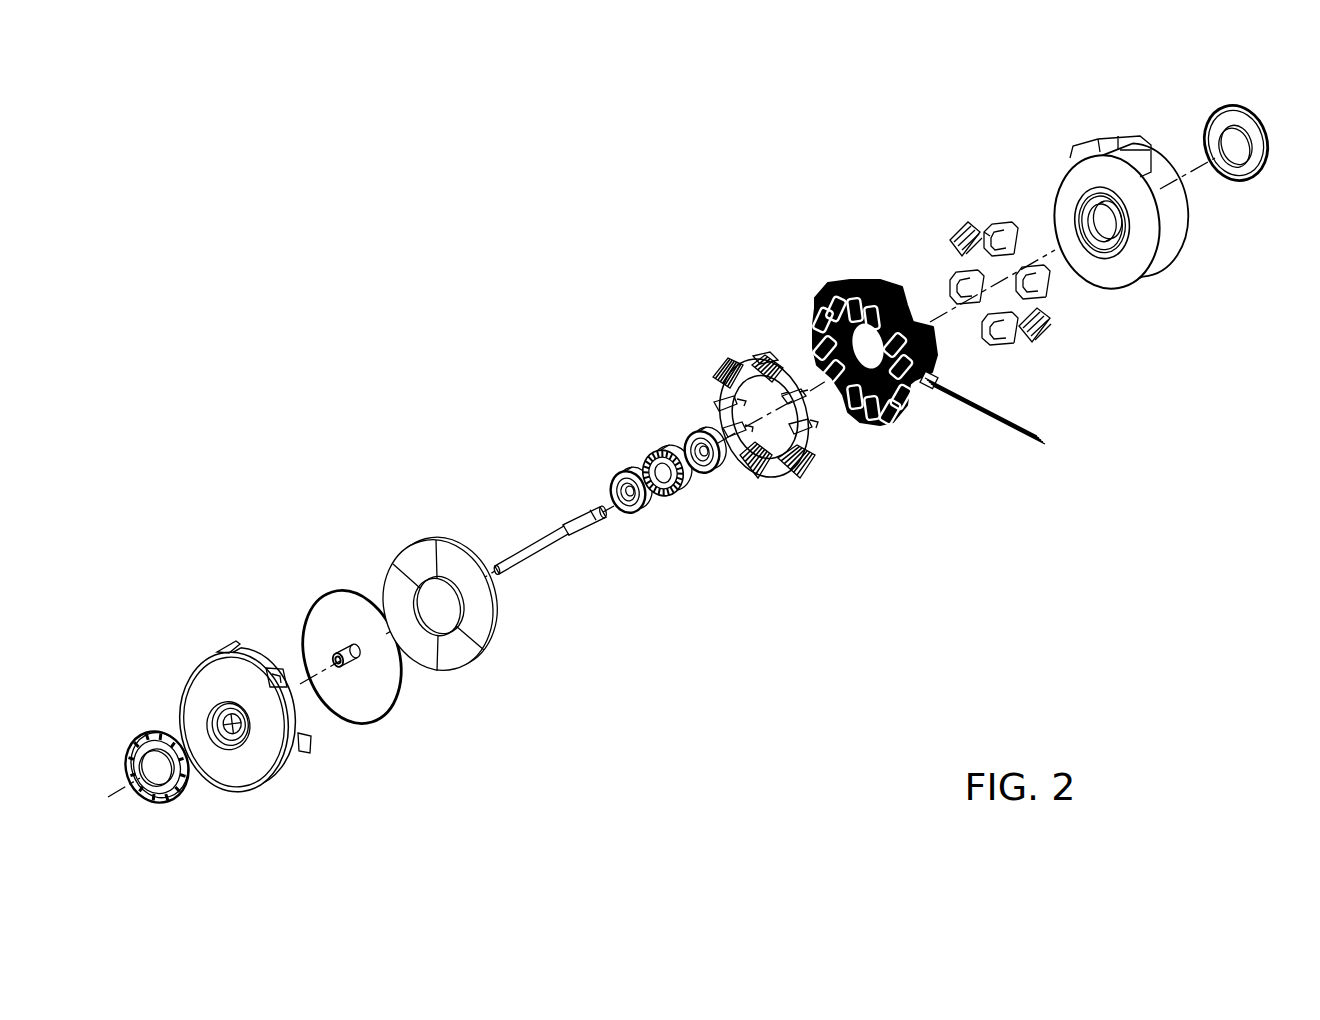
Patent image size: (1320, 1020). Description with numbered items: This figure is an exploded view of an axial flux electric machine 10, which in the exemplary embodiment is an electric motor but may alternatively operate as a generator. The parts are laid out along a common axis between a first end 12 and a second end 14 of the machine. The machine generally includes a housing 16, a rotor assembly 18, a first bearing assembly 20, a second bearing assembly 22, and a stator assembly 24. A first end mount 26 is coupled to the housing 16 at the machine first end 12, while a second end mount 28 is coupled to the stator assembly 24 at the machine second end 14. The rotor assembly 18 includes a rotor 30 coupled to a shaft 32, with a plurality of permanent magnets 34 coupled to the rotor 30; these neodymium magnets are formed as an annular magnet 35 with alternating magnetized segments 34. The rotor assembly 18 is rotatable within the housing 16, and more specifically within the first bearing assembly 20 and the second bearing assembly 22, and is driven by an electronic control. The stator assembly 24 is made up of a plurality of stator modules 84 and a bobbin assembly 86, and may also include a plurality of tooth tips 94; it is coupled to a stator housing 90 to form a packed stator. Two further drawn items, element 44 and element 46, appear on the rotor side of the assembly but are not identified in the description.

The axial flux electric machine 10 is at (709, 454).
The first end 12 is at (207, 719).
The second end 14 is at (1172, 174).
The housing 16 is at (283, 780).
The rotor assembly 18 is at (543, 526).
The first bearing assembly 20 is at (640, 511).
The second bearing assembly 22 is at (690, 432).
The stator assembly 24 is at (922, 355).
The first end mount 26 is at (175, 803).
The second end mount 28 is at (1250, 183).
The rotor 30 is at (340, 666).
The shaft 32 is at (548, 556).
The permanent magnets 34 is at (412, 552).
The annular magnet 35 is at (469, 608).
The plate face 44 is at (320, 592).
The hub pin 46 is at (336, 672).
The stator modules 84 is at (949, 221).
The bobbin assembly 86 is at (830, 286).
The stator housing 90 is at (1093, 141).
The tooth tips 94 is at (722, 354).